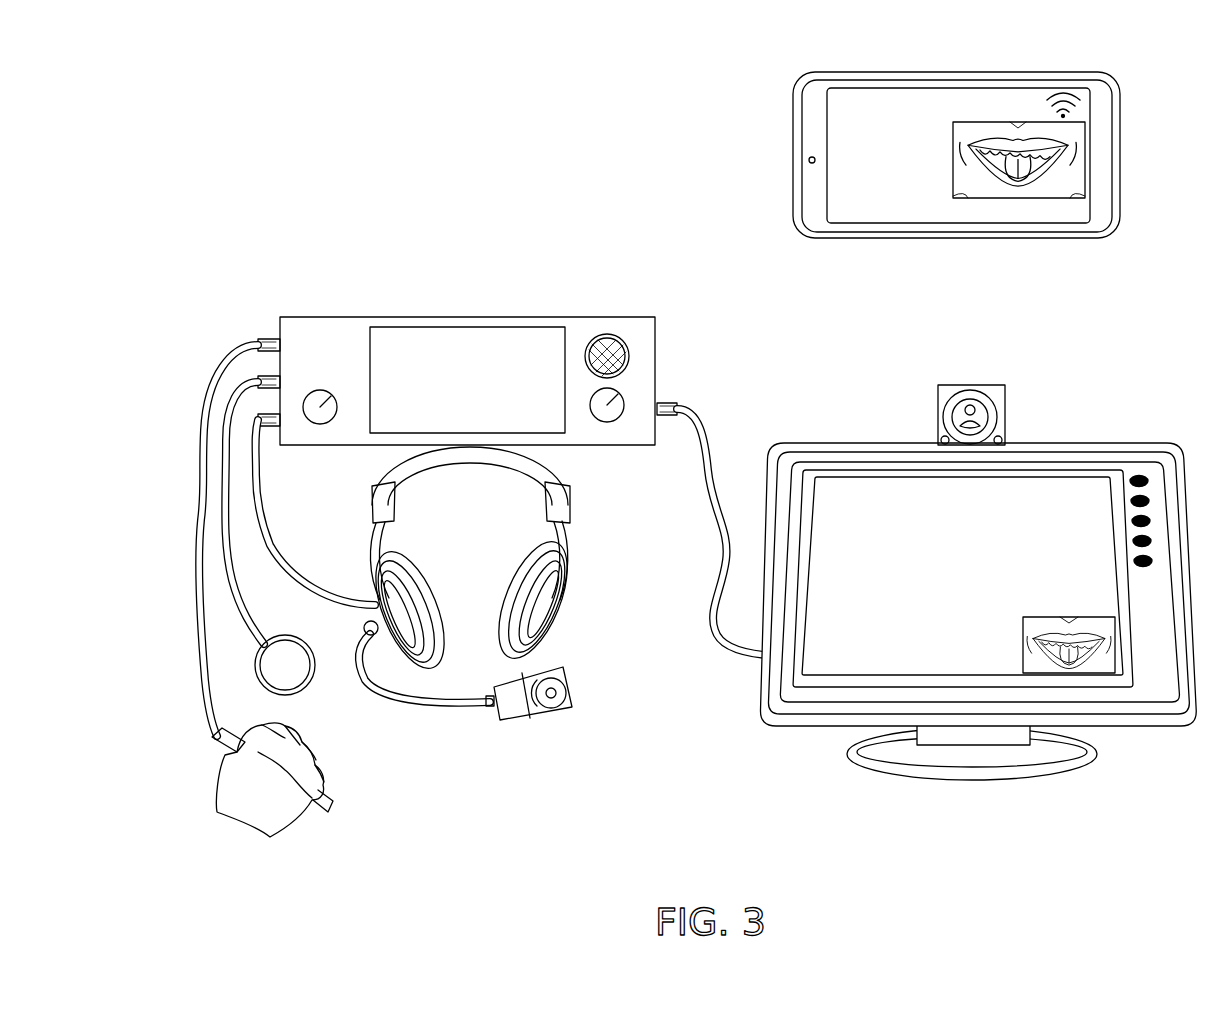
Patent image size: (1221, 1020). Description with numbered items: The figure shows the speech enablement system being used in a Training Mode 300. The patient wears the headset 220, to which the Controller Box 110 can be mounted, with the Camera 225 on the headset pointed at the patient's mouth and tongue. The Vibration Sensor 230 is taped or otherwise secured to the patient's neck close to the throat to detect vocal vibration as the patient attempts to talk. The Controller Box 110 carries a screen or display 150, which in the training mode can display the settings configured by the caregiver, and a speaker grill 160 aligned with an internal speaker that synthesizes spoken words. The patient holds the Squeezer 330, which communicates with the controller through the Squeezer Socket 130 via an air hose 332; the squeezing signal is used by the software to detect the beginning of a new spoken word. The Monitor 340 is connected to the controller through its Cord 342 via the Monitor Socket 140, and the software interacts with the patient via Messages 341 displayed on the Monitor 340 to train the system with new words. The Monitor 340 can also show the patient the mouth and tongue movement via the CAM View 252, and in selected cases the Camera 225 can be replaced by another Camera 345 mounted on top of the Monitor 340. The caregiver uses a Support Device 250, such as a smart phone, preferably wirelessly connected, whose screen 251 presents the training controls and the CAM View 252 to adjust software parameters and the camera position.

The Training Mode 300 is at (252, 78).
The Controller Box 110 is at (318, 317).
The Squeezer Socket 130 is at (262, 339).
The air hose 332 is at (233, 352).
The screen or display 150 is at (465, 330).
The speaker grill 160 is at (607, 333).
The Monitor Socket 140 is at (672, 403).
The Cord 342 is at (703, 475).
The Monitor 340 is at (805, 443).
The Messages 341 is at (860, 477).
The Camera 345 is at (1005, 410).
The Support Device 250 is at (1062, 80).
The screen/display 251 is at (918, 195).
The CAM View 252 is at (1045, 178).
The headphone/headset 220 is at (563, 613).
The Camera 225 is at (573, 693).
The Vibration Sensor 230 is at (308, 690).
The Squeezer 330 is at (323, 812).